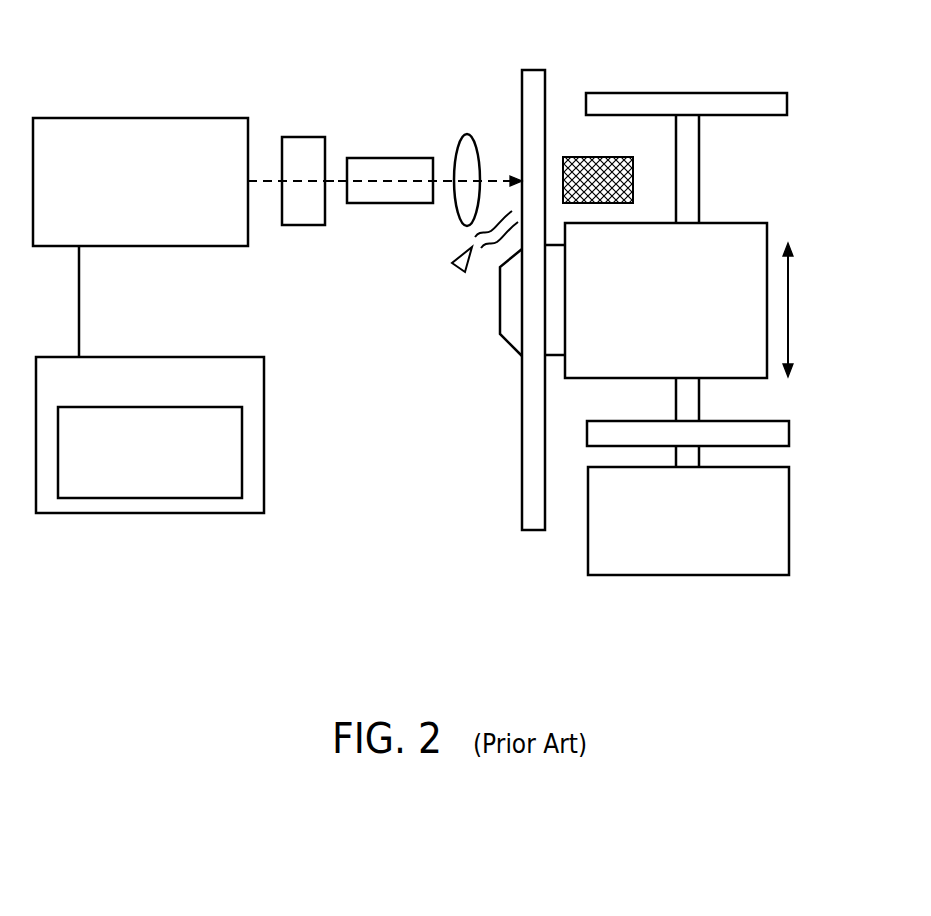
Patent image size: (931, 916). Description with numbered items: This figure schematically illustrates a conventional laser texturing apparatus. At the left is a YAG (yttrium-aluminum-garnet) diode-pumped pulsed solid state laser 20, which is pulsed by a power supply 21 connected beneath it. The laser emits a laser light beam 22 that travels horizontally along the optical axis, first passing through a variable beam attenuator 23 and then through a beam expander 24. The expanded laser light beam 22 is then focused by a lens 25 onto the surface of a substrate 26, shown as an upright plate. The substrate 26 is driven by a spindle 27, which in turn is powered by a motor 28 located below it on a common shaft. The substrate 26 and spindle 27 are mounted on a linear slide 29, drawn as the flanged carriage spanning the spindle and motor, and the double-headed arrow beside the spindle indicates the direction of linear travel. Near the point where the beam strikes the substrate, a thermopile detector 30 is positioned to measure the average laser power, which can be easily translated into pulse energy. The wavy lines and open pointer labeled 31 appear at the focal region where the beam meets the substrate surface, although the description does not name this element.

The pulsed solid state laser 20 is at (91, 118).
The power supply 21 is at (265, 452).
The laser light beam 22 is at (328, 181).
The variable beam attenuator 23 is at (298, 126).
The beam expander 24 is at (392, 233).
The lens 25 is at (453, 126).
The substrate 26 is at (522, 496).
The spindle 27 is at (747, 247).
The motor 28 is at (789, 518).
The linear slide 29 is at (700, 170).
The thermopile detector 30 is at (582, 130).
The laser-induced plume / ejected material 31 is at (462, 275).